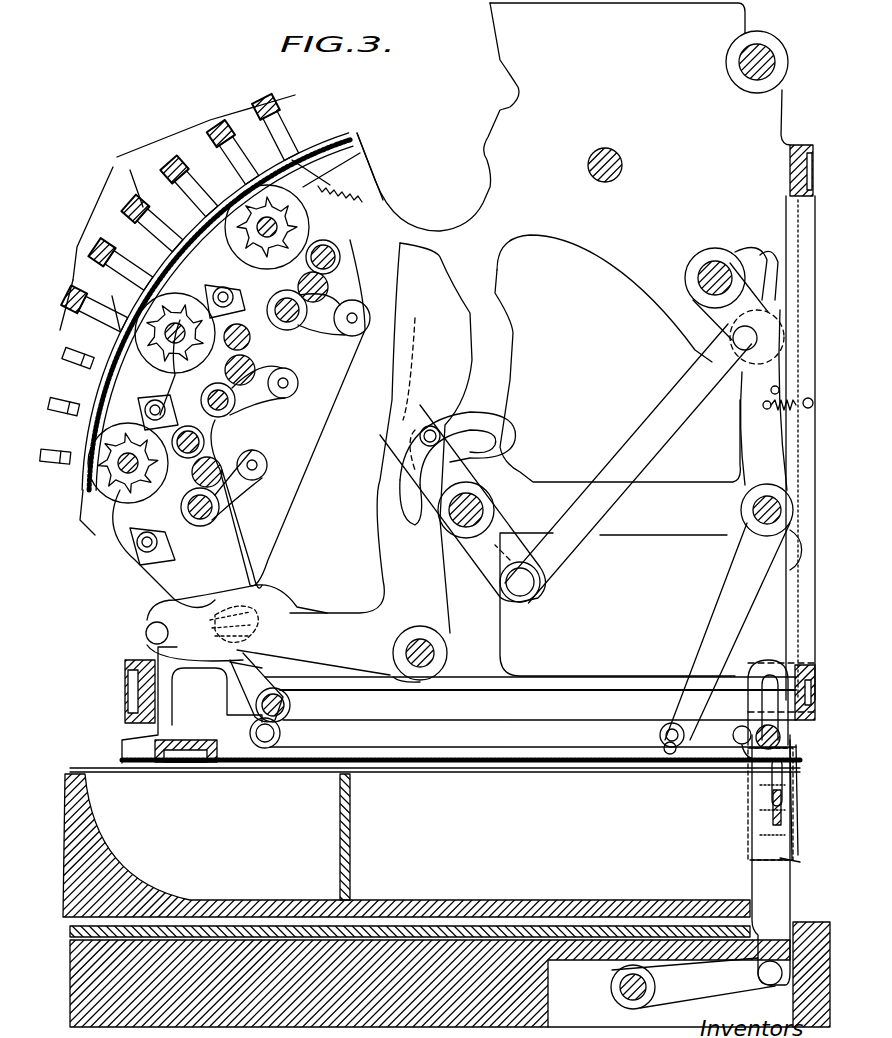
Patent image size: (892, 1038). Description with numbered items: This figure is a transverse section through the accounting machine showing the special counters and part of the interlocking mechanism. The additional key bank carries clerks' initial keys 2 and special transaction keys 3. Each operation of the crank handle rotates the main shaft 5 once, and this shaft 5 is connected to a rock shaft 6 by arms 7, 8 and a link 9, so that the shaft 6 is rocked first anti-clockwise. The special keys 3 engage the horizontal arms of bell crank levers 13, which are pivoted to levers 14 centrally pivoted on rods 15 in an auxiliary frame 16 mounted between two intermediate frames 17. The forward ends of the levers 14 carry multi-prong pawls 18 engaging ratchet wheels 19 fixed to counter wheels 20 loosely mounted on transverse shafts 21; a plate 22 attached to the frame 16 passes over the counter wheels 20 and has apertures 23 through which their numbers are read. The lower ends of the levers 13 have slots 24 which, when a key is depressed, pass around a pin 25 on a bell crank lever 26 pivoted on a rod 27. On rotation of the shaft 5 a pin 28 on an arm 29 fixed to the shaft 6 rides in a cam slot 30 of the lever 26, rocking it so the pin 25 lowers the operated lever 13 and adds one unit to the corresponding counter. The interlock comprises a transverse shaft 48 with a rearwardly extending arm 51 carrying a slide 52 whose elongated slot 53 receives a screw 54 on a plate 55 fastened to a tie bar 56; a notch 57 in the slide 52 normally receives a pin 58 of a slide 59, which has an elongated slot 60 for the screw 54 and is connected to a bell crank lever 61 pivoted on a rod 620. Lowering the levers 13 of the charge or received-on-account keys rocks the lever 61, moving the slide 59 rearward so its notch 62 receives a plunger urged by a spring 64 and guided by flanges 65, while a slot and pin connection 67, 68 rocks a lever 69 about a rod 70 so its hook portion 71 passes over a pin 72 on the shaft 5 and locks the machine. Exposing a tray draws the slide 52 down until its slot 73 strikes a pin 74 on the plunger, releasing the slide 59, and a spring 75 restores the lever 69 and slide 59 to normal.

The clerks' initial keys 2 is at (177, 212).
The special transaction keys 3 is at (70, 372).
The shaft 5 is at (714, 250).
The shaft 6 is at (500, 490).
The arm 7 is at (710, 340).
The arm 8 is at (512, 535).
The link 9 is at (645, 428).
The bell crank levers 13 is at (300, 450).
The levers 14 is at (360, 342).
The rods 15 is at (225, 415).
The auxiliary frame 16 is at (100, 510).
The intermediate frames 17 is at (455, 236).
The multi-prong pawls 18 is at (190, 200).
The ratchet wheels 19 is at (340, 142).
The counter wheels 20 is at (355, 165).
The transverse shafts 21 is at (150, 312).
The plate 22 is at (317, 160).
The apertures 23 is at (181, 214).
The slots 24 is at (146, 636).
The pin 25 is at (262, 645).
The bell crank lever 26 is at (390, 575).
The rod 27 is at (440, 655).
The pin 28 is at (430, 425).
The arm 29 is at (450, 435).
The cam slot 30 is at (398, 505).
The transverse shaft 48 is at (611, 995).
The arm 51 is at (705, 990).
The slide 52 is at (760, 885).
The elongated slot 53 is at (760, 698).
The screw 54 is at (748, 770).
The plate 55 is at (797, 815).
The tie bar 56 is at (793, 665).
The notch 57 is at (752, 800).
The pin 58 is at (782, 737).
The slide 59 is at (578, 745).
The elongated slot 60 is at (733, 735).
The bell crank lever 61 is at (263, 683).
The notch 62 is at (730, 750).
The spring 64 is at (770, 832).
The flanges 65 is at (795, 862).
The slot 67 is at (678, 722).
The pin 68 is at (660, 740).
The lever 69 is at (720, 590).
The rod 70 is at (752, 510).
The hook portion 71 is at (770, 260).
The pin 72 is at (745, 255).
The slot 73 is at (784, 772).
The pin 74 is at (784, 797).
The spring 75 is at (745, 440).
The rod 620 is at (290, 706).